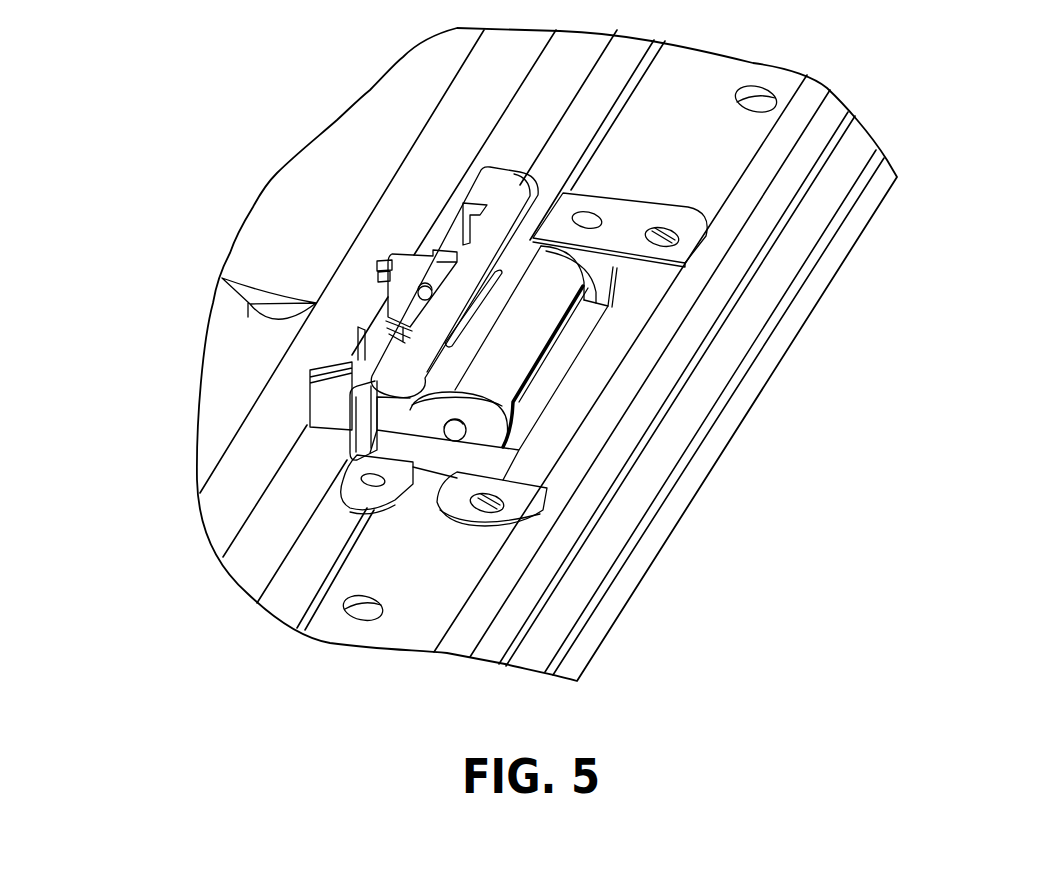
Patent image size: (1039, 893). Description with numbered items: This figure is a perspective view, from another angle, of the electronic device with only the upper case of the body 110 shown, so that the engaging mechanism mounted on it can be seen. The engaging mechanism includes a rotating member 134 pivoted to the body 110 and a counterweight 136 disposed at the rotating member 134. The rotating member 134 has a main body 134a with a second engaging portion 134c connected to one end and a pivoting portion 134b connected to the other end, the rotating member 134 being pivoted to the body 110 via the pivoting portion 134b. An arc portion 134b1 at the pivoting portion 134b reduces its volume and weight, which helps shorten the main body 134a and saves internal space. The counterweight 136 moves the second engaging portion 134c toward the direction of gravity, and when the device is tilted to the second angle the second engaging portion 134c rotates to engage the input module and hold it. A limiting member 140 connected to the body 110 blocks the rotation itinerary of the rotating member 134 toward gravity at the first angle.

The body 110 is at (747, 197).
The rotating member 134 is at (507, 373).
The main body 134a is at (447, 373).
The pivoting portion 134b is at (554, 364).
The arc portion 134b1 is at (538, 320).
The second engaging portion 134c is at (357, 350).
The counterweight 136 is at (403, 317).
The limiting member 140 is at (377, 381).